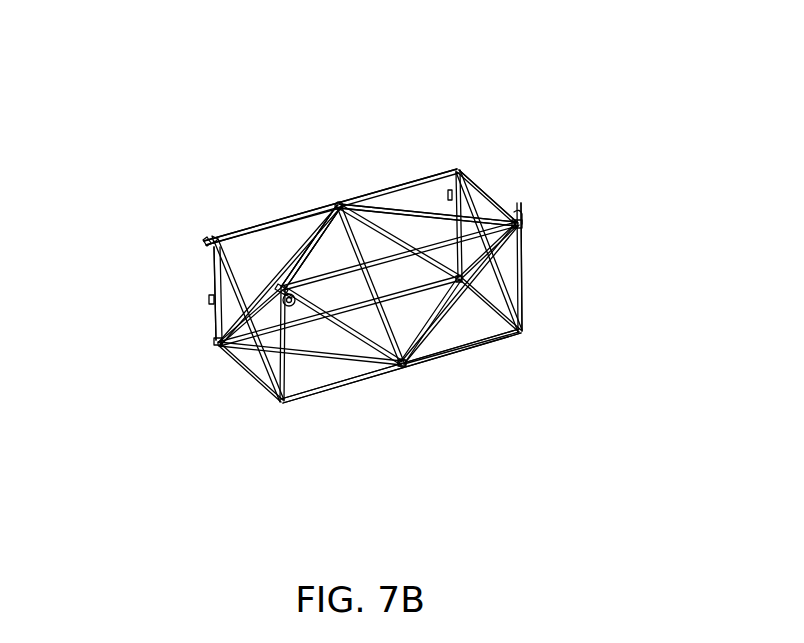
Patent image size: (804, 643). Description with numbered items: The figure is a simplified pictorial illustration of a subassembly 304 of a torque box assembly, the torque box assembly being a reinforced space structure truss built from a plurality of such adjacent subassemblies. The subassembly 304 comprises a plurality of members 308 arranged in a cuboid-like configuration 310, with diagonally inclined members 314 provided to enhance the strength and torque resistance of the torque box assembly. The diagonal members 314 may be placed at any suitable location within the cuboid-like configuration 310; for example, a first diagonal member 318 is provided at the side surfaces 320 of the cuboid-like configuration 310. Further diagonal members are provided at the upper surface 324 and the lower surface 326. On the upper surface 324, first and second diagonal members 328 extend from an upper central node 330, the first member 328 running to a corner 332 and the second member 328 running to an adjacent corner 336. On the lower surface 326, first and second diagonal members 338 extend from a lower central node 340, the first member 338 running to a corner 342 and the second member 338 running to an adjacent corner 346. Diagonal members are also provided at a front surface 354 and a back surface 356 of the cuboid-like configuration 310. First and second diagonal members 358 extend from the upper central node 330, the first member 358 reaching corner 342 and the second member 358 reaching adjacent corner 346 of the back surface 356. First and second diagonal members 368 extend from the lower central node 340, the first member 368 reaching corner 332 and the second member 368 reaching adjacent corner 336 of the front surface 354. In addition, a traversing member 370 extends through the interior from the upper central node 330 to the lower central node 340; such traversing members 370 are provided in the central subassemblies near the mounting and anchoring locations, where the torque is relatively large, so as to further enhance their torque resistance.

The subassembly 304 is at (253, 473).
The members 308 is at (240, 230).
The cuboid-like configuration 310 is at (487, 157).
The diagonally inclined members 314 is at (455, 180).
The first diagonal member 318 is at (255, 368).
The side surfaces 320 is at (125, 320).
The upper surface 324 is at (332, 82).
The lower surface 326 is at (430, 412).
The first and second diagonal members 328 is at (333, 210).
The upper central node 330 is at (347, 200).
The corner 332 is at (280, 280).
The adjacent corner 336 is at (518, 208).
The first and second diagonal members 338 is at (331, 386).
The lower central node 340 is at (401, 370).
The corner 342 is at (215, 342).
The adjacent corner 346 is at (521, 258).
The front surface 354 is at (513, 343).
The back surface 356 is at (262, 200).
The first and second diagonal members 358 is at (318, 222).
The first and second diagonal members 368 is at (357, 345).
The traversing member 370 is at (325, 212).